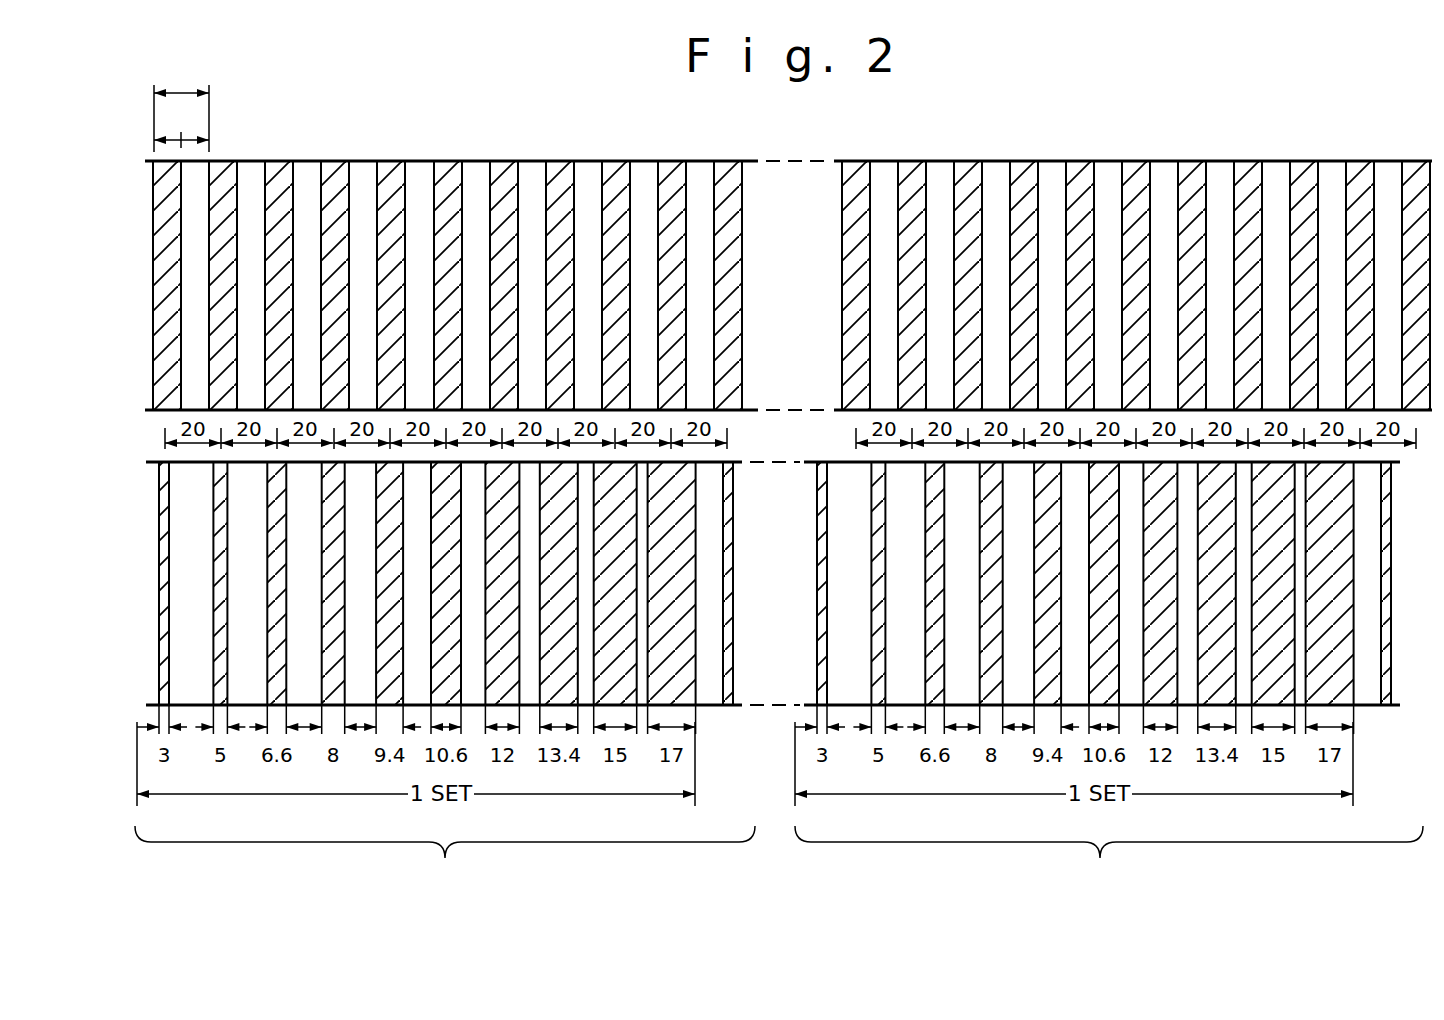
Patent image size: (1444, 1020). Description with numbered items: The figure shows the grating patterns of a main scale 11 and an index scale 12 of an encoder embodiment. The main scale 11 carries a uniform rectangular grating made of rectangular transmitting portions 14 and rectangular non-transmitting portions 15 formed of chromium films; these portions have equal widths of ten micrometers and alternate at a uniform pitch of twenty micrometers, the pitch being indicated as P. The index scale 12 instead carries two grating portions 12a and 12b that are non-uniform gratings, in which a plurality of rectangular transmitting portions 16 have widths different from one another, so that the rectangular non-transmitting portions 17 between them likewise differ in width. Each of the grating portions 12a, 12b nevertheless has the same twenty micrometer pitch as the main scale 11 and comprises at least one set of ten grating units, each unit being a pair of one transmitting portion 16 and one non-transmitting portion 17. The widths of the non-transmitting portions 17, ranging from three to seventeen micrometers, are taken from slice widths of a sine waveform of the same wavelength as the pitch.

The main scale 11 is at (758, 258).
The index scale 12 is at (749, 676).
The grating portion 12a is at (445, 676).
The grating portion 12b is at (1109, 676).
The transmitting portion 14 is at (475, 175).
The non-transmitting portion 15 is at (508, 177).
The transmitting portion 16 is at (470, 695).
The non-transmitting portion 17 is at (510, 680).